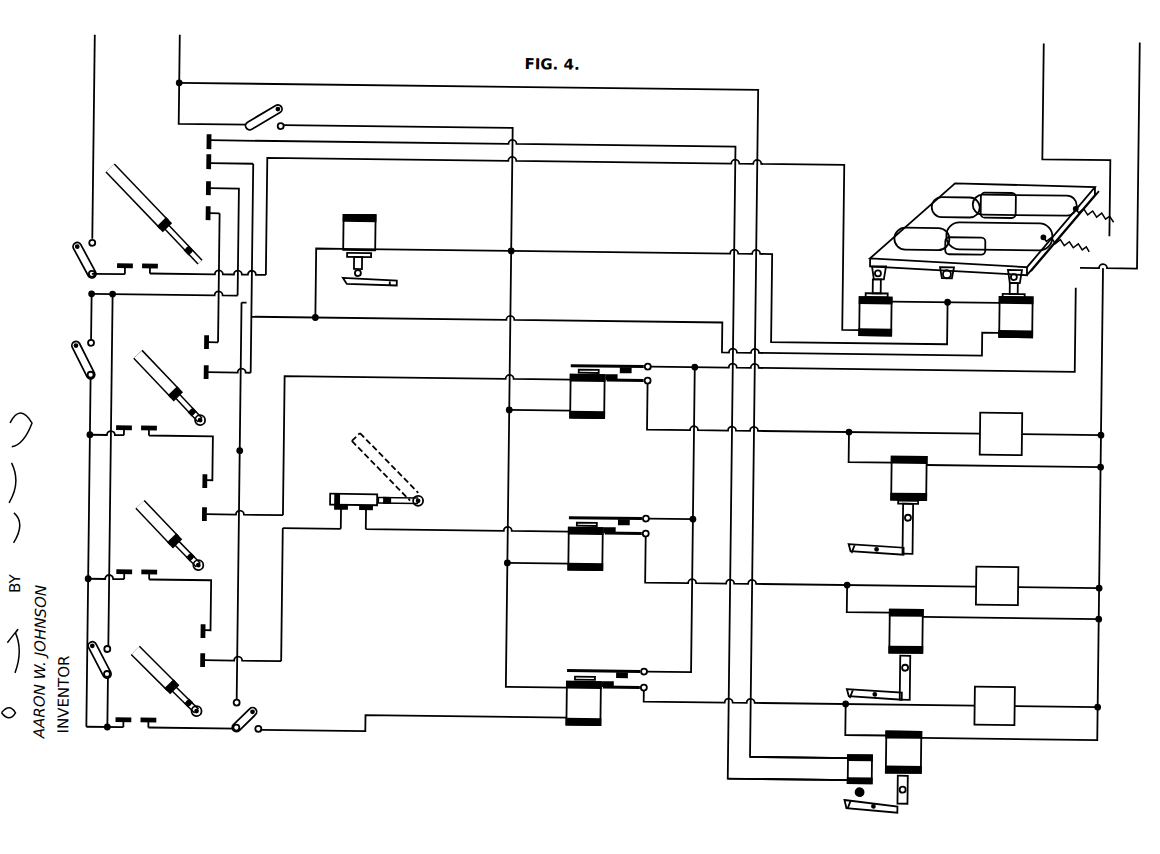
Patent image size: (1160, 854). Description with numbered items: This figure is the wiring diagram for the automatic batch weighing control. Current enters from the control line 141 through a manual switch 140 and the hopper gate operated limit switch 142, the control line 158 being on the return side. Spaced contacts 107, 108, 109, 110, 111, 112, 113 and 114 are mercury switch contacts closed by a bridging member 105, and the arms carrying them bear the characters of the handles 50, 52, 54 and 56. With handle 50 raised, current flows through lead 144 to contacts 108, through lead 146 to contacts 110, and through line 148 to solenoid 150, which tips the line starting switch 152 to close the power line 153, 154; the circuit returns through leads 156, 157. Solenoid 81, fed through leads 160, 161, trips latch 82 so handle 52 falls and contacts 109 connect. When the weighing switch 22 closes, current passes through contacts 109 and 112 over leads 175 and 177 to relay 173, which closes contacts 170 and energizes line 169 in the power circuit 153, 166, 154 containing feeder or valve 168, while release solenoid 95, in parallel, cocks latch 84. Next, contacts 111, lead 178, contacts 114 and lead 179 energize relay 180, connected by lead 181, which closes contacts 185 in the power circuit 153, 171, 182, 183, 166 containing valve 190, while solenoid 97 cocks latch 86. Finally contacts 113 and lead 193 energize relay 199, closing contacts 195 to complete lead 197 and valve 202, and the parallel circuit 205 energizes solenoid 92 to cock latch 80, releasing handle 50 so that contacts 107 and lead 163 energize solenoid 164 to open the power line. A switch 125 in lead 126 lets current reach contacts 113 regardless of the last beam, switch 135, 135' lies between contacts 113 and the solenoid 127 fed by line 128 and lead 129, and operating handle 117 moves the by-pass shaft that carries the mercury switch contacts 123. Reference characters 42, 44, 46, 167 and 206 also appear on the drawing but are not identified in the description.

The weighing switch 22 is at (80, 366).
The pivot 42 is at (194, 428).
The pivot 44 is at (204, 572).
The pivot 46 is at (194, 717).
The handle 50 is at (186, 256).
The handle 52 is at (195, 412).
The handle 54 is at (194, 558).
The handle 56 is at (195, 704).
The latch 80 is at (848, 802).
The solenoid 81 is at (342, 232).
The latch 82 is at (370, 287).
The latch 84 is at (885, 552).
The latch 86 is at (866, 686).
The solenoid 92 is at (925, 752).
The release solenoid 95 is at (900, 480).
The solenoid 97 is at (925, 634).
The bridging member 105 is at (148, 208).
The spaced contacts 107 is at (137, 279).
The spaced contacts 108 is at (224, 238).
The spaced contacts 109 is at (150, 453).
The spaced contacts 110 is at (228, 357).
The spaced contacts 111 is at (120, 583).
The spaced contacts 112 is at (243, 498).
The spaced contacts 113 is at (135, 730).
The spaced contacts 114 is at (241, 646).
The operating handle 117 is at (402, 507).
The spaced contacts 123 is at (426, 518).
The switch 125 is at (110, 672).
The lead 126 is at (112, 474).
The solenoid 127 is at (851, 770).
The line 128 is at (668, 88).
The lead 129 is at (242, 454).
The switch 135 is at (400, 734).
The switch 135' is at (260, 689).
The manual switch 140 is at (80, 275).
The control line 141 is at (88, 147).
The hopper gate operated limit switch 142 is at (256, 114).
The lead 144 is at (170, 304).
The lead 146 is at (216, 328).
The line 148 is at (251, 352).
The solenoid 150 is at (1030, 313).
The line starting switch 152 is at (912, 218).
The power line 153 is at (1037, 124).
The power line 154 is at (1132, 104).
The lead 156 is at (724, 252).
The lead 157 is at (506, 122).
The control line 158 is at (174, 116).
The lead 160 is at (313, 290).
The lead 161 is at (450, 252).
The lead 163 is at (265, 208).
The solenoid 164 is at (885, 313).
The power line circuit 166 is at (1102, 394).
The conductor 167 is at (1045, 428).
The power feeder or valve 168 is at (979, 422).
The line 169 is at (828, 428).
The contacts 170 is at (612, 364).
The power line circuit 171 is at (802, 369).
The relay 173 is at (600, 410).
The lead 175 is at (368, 382).
The lead 177 is at (525, 413).
The lead 178 is at (202, 588).
The lead 179 is at (285, 594).
The relay 180 is at (600, 556).
The lead 181 is at (525, 564).
The power line circuit 182 is at (784, 586).
The power line circuit 183 is at (1080, 574).
The contacts 185 is at (636, 512).
The power feeder or valve 190 is at (1000, 572).
The lead 193 is at (185, 745).
The contacts 195 is at (632, 665).
The lead 197 is at (1039, 710).
The relay 199 is at (570, 698).
The power feeder or valve 202 is at (998, 692).
The parallel circuit 205 is at (848, 724).
The conductor 206 is at (1031, 736).